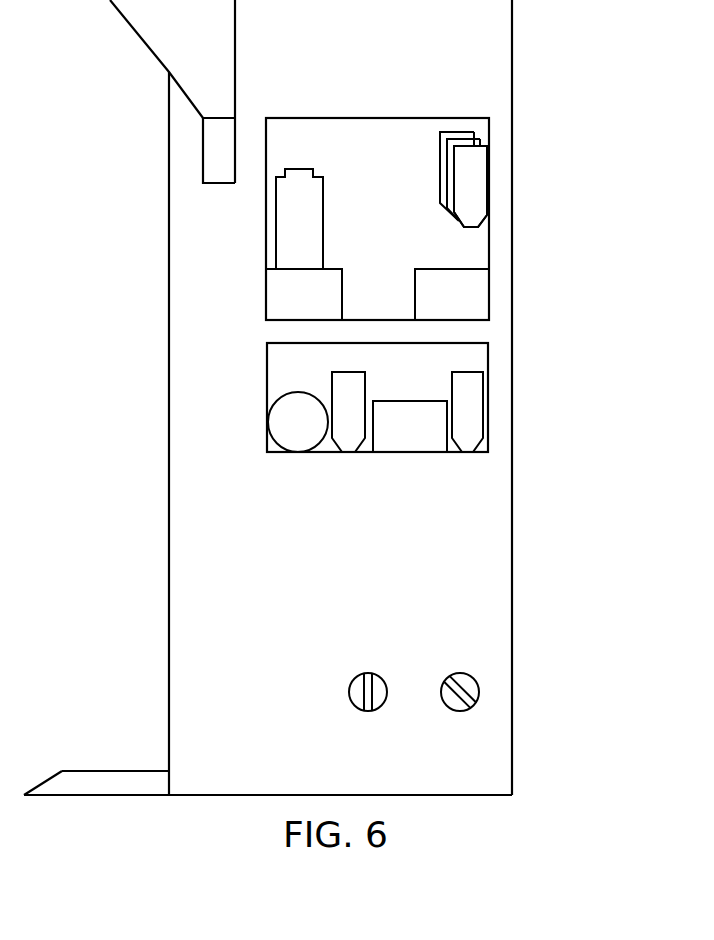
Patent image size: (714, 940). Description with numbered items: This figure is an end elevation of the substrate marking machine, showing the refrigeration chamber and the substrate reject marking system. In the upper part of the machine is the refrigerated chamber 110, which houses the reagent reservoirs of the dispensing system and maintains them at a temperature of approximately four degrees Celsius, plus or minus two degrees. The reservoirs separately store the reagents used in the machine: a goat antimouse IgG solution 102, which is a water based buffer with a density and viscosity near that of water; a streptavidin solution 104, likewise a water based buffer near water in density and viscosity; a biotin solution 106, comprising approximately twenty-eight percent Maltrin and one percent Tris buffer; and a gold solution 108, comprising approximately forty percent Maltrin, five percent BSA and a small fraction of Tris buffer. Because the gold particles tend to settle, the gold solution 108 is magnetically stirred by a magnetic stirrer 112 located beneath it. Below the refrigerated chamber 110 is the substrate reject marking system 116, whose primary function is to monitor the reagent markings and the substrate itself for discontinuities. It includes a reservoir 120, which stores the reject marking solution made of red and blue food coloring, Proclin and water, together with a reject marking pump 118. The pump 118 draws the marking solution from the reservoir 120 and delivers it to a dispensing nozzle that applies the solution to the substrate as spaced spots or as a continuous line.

The refrigerated chamber 110 is at (383, 127).
The goat antimouse IgG solution 102 is at (470, 133).
The streptavidin solution 104 is at (481, 136).
The biotin solution 106 is at (498, 167).
The gold solution 108 is at (316, 176).
The magnetic stirrer 112 is at (270, 298).
The substrate reject marking system 116 is at (491, 354).
The reject marking pump 118 is at (270, 427).
The reservoir 120 is at (347, 452).